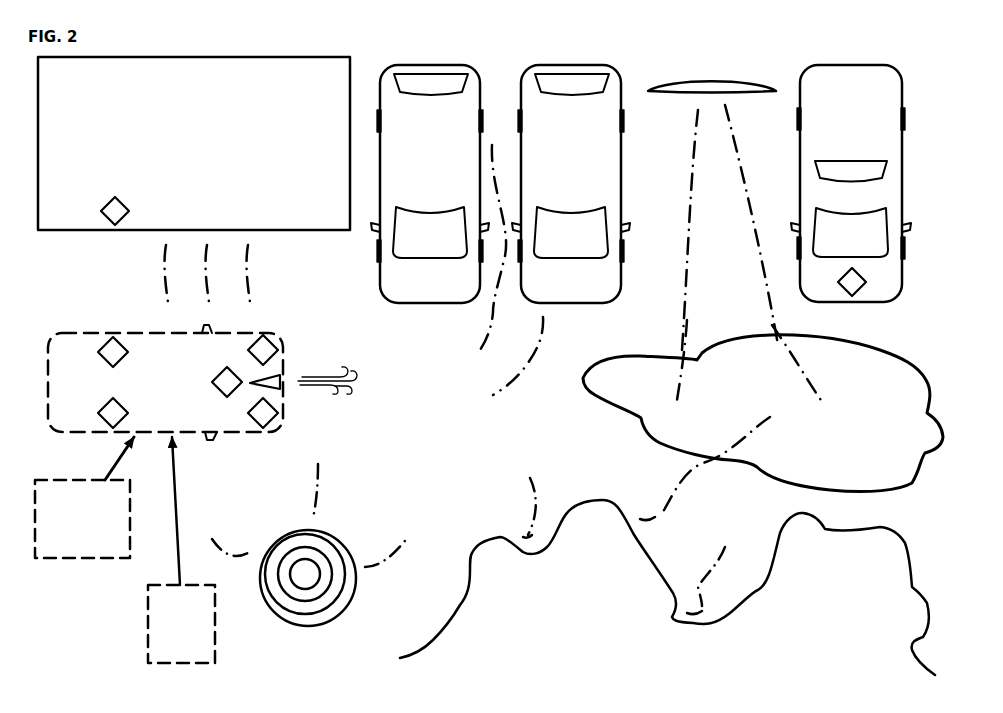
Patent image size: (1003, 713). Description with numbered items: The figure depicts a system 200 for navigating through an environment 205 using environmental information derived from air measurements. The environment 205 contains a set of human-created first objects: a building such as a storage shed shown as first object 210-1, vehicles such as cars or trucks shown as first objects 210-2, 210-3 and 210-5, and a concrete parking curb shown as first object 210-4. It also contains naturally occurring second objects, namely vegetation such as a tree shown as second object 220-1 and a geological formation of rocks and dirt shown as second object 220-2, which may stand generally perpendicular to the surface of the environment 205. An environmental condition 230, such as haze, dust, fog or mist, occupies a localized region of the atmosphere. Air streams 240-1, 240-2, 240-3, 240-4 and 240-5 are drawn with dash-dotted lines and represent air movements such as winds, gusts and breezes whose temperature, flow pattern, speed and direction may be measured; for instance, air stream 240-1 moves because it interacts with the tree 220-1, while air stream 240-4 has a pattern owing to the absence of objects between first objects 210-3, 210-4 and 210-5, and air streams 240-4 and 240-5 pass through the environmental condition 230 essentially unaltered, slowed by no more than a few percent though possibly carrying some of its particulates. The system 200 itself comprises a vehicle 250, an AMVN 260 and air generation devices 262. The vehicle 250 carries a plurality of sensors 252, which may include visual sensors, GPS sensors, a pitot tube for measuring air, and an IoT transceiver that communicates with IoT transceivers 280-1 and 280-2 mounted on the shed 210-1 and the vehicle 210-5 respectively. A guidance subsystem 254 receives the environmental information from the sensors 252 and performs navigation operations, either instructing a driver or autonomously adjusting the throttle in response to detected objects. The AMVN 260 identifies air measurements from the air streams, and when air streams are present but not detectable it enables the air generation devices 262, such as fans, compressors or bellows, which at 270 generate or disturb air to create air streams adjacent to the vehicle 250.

The system 200 is at (77, 642).
The environment 205 is at (498, 465).
The first object 210-1 is at (214, 153).
The first object 210-2 is at (449, 165).
The first object 210-3 is at (589, 165).
The first object 210-4 is at (717, 78).
The first object 210-5 is at (873, 133).
The second object 220-1 is at (305, 636).
The second object 220-2 is at (648, 645).
The environmental condition 230 is at (856, 438).
The air stream 240-1 is at (296, 483).
The air stream 240-2 is at (266, 279).
The air stream 240-3 is at (482, 371).
The air stream 240-4 is at (671, 481).
The air stream 240-5 is at (726, 254).
The vehicle 250 is at (84, 390).
The sensors 252 is at (232, 358).
The guidance subsystem 254 is at (84, 497).
The AMVN 260 is at (181, 550).
The air generation devices 262 is at (286, 394).
The air generation 270 is at (351, 401).
The IoT transceiver 280-1 is at (107, 219).
The IoT transceiver 280-2 is at (851, 286).